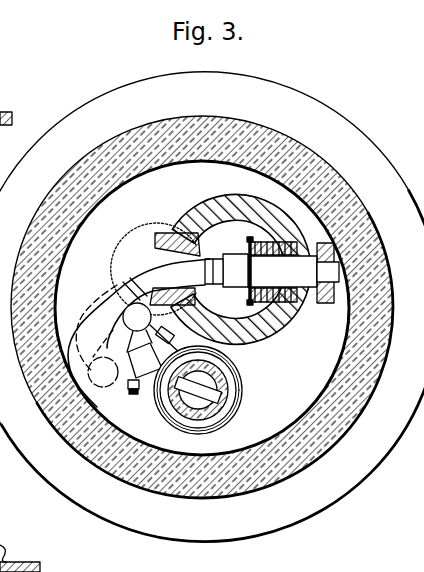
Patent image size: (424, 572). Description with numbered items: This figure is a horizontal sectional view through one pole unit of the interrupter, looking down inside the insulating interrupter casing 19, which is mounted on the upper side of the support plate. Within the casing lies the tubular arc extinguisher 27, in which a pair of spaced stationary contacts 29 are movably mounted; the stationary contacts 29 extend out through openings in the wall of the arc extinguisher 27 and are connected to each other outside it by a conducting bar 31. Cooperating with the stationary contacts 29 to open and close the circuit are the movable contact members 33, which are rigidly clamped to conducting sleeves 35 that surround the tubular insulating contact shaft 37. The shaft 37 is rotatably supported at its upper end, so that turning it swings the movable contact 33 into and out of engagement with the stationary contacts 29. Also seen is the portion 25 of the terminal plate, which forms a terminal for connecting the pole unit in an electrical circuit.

The insulating interrupter casing 19 is at (289, 137).
The portion of terminal plate 25 is at (11, 107).
The tubular arc extinguisher 27 is at (193, 206).
The stationary contacts 29 is at (234, 255).
The conducting bar 31 is at (327, 303).
The movable contact members 33 is at (145, 270).
The conducting sleeves 35 is at (236, 369).
The tubular insulating contact shaft 37 is at (162, 408).